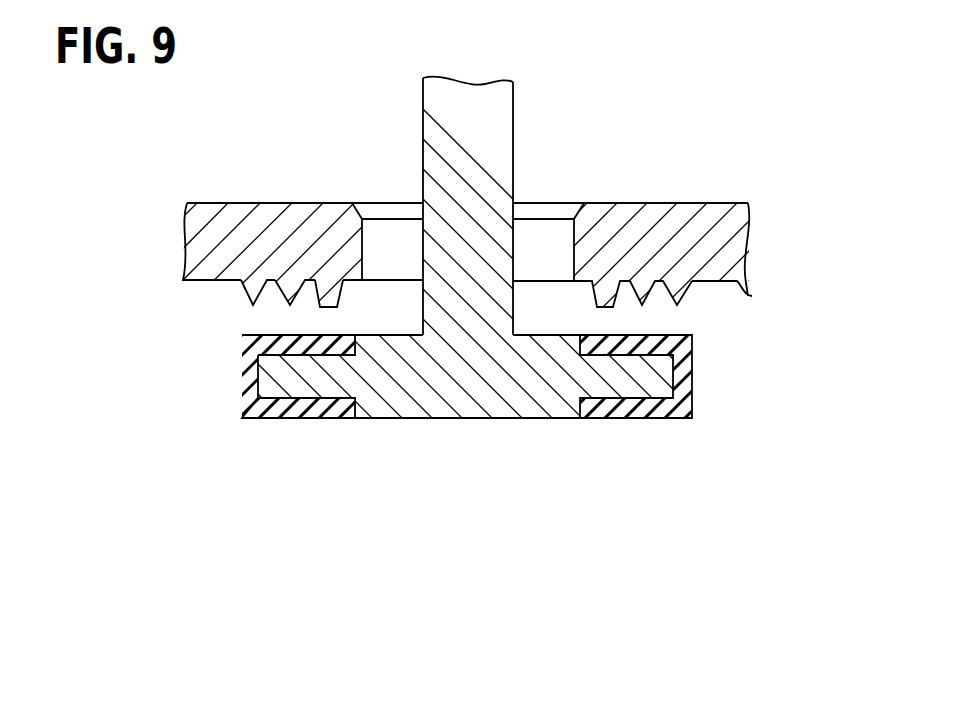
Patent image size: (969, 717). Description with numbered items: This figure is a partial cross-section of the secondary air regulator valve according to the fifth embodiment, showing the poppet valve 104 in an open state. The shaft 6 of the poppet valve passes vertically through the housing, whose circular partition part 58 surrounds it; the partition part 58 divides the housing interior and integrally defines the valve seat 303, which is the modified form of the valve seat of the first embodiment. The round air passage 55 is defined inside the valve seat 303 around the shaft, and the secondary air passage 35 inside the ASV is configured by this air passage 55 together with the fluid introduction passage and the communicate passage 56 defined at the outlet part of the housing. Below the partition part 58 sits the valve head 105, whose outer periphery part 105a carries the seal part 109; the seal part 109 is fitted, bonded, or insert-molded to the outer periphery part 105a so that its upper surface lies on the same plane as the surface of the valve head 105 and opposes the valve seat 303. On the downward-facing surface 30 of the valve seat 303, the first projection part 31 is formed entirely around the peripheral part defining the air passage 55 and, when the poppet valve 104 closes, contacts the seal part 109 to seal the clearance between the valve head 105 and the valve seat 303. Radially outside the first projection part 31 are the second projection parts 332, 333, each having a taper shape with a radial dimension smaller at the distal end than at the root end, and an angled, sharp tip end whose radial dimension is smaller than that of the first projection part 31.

The shaft 6 is at (367, 223).
The surface of the valve seat 30 is at (476, 314).
The first projection part 31 is at (327, 298).
The secondary air passage 35 is at (537, 127).
The air passage 55 is at (543, 230).
The communicate passage 56 is at (730, 393).
The partition part 58 is at (712, 223).
The poppet valve 104 is at (482, 427).
The valve head 105 is at (368, 406).
The outer periphery part 105a is at (265, 377).
The seal part 109 is at (297, 410).
The valve seat 303 is at (710, 301).
The second projection part 332 is at (293, 292).
The second projection part 333 is at (260, 293).